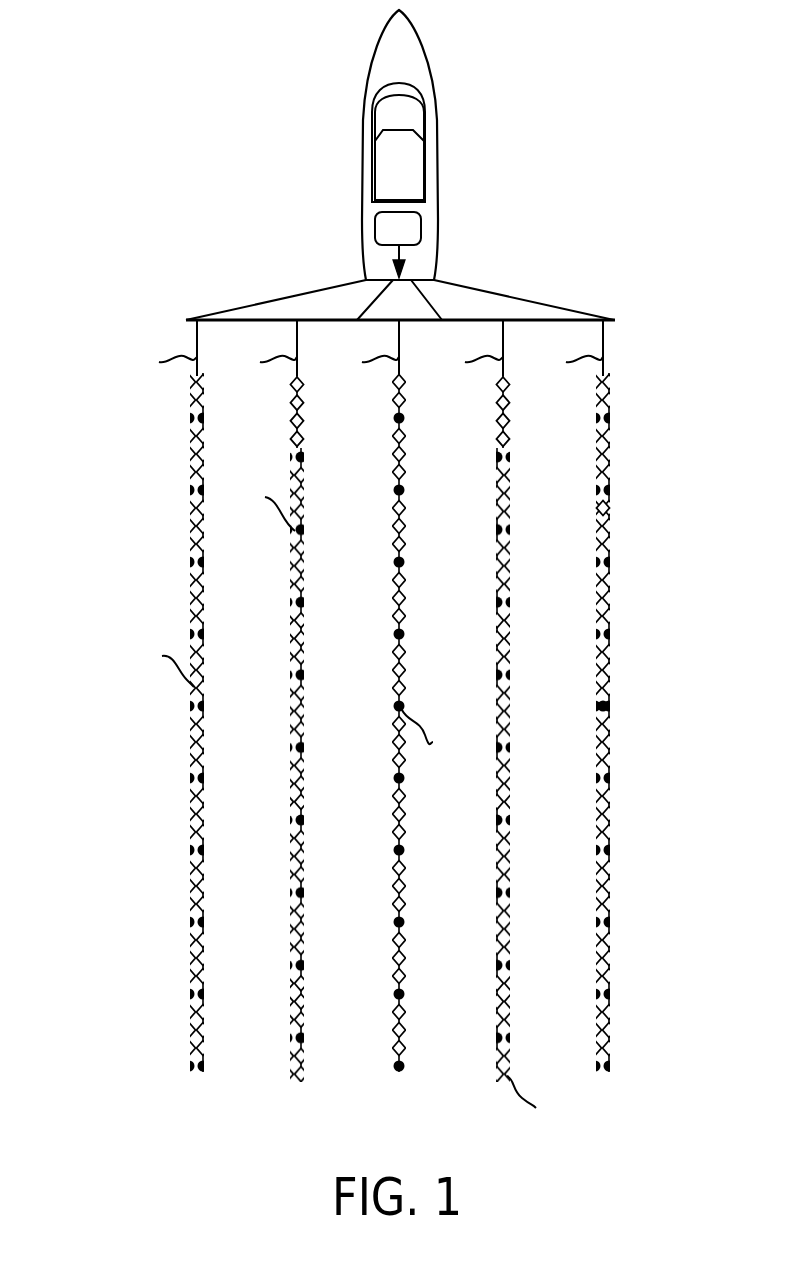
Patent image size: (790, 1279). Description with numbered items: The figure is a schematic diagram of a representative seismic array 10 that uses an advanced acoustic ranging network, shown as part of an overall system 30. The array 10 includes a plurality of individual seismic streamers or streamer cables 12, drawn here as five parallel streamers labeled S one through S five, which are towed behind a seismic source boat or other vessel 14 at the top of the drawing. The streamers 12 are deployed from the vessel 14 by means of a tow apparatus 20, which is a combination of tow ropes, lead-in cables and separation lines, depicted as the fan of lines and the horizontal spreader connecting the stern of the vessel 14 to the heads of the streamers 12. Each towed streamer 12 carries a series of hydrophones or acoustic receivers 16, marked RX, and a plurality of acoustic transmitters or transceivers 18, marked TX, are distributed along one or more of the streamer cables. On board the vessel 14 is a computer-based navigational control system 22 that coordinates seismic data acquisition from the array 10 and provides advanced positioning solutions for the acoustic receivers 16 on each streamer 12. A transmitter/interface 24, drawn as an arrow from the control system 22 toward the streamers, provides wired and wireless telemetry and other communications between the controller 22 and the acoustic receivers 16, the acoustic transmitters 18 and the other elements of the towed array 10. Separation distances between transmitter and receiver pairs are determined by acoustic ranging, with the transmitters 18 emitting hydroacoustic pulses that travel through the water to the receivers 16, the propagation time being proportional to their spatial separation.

The seismic array 10 is at (104, 312).
The seismic streamer 12 is at (413, 708).
The vessel 14 is at (438, 153).
The acoustic receiver 16 is at (592, 492).
The acoustic transmitter 18 is at (592, 693).
The tow apparatus 20 is at (527, 318).
The control system 22 is at (421, 229).
The transmitter/interface 24 is at (396, 247).
The system 30 is at (210, 212).